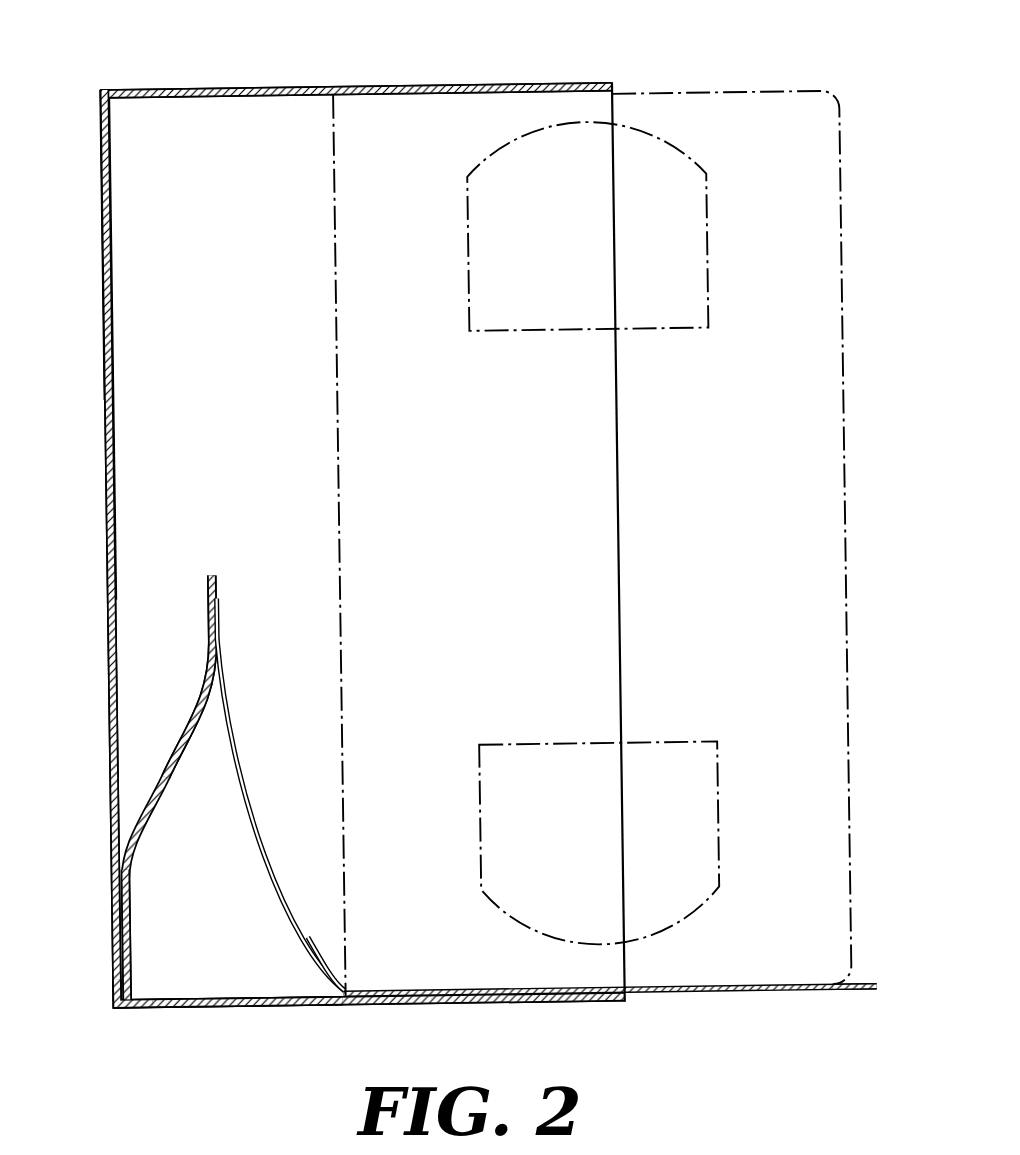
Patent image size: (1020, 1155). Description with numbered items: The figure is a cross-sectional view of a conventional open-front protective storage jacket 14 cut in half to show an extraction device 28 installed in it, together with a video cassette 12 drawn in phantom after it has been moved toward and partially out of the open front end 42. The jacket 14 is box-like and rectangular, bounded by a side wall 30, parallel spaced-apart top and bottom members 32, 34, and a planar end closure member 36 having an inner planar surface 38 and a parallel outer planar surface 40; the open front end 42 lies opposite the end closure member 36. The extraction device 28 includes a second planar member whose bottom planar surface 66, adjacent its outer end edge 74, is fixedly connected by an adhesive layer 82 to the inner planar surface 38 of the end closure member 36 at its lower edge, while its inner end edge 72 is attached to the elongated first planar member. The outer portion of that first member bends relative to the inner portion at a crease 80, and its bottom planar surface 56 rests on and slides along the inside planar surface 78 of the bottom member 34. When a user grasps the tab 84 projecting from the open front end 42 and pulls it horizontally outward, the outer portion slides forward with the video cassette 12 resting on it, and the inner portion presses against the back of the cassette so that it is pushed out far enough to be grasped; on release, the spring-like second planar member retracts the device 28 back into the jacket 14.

The video cassette 12 is at (846, 455).
The protective storage jacket 14 is at (283, 82).
The extraction device 28 is at (197, 659).
The side wall 30 is at (291, 341).
The top member 32 is at (405, 88).
The bottom member 34 is at (380, 1006).
The end closure member 36 is at (97, 283).
The inner planar surface 38 is at (113, 357).
The outer planar surface 40 is at (101, 139).
The open front end 42 is at (622, 438).
The bottom planar surface 56 is at (745, 995).
The bottom planar surface of second planar member 66 is at (178, 721).
The inner end edge 72 is at (221, 649).
The outer end edge 74 is at (125, 1008).
The inside planar surface 78 is at (234, 1001).
The crease 80 is at (348, 990).
The adhesive layer 82 is at (112, 931).
The tab 84 is at (858, 984).